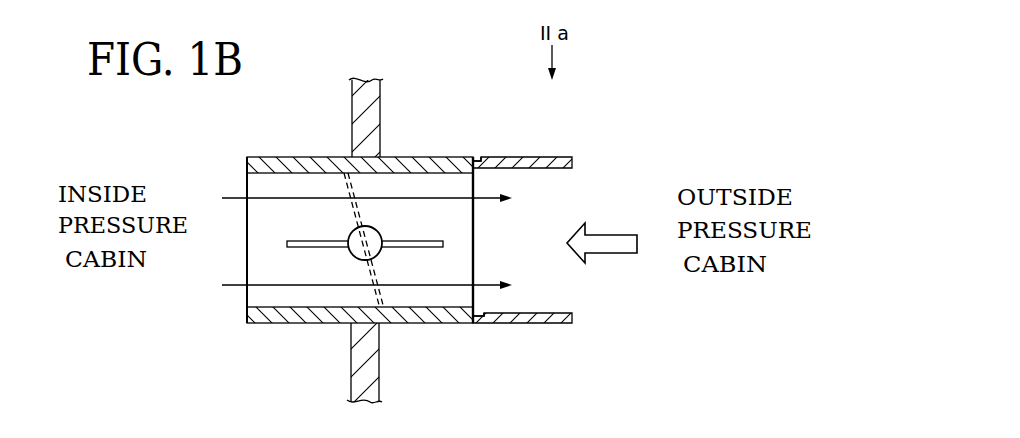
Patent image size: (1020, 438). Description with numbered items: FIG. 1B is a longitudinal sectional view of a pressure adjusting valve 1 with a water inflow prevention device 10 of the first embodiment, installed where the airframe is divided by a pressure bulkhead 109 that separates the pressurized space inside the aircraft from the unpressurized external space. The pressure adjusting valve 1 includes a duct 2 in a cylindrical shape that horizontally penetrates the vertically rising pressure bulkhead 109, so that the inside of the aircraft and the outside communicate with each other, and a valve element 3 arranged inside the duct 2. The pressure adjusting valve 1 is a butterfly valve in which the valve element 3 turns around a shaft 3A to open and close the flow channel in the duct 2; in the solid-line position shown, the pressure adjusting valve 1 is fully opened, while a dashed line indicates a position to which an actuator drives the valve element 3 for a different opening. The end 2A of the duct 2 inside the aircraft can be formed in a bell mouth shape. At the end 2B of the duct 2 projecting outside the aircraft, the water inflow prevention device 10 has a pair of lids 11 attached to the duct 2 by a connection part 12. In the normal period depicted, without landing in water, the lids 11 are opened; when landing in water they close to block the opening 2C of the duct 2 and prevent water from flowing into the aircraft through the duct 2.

The pressure adjusting valve 1 is at (295, 125).
The duct 2 is at (399, 157).
The end of the duct inside the aircraft 2A is at (252, 157).
The end of the duct projecting outside the aircraft 2B is at (445, 157).
The opening of the duct 2C is at (462, 318).
The valve element 3 is at (297, 241).
The shaft 3A is at (381, 238).
The water inflow prevention device 10 is at (592, 157).
The lids 11 is at (538, 157).
The connection part 12 is at (478, 157).
The pressure bulkhead 109 is at (382, 100).